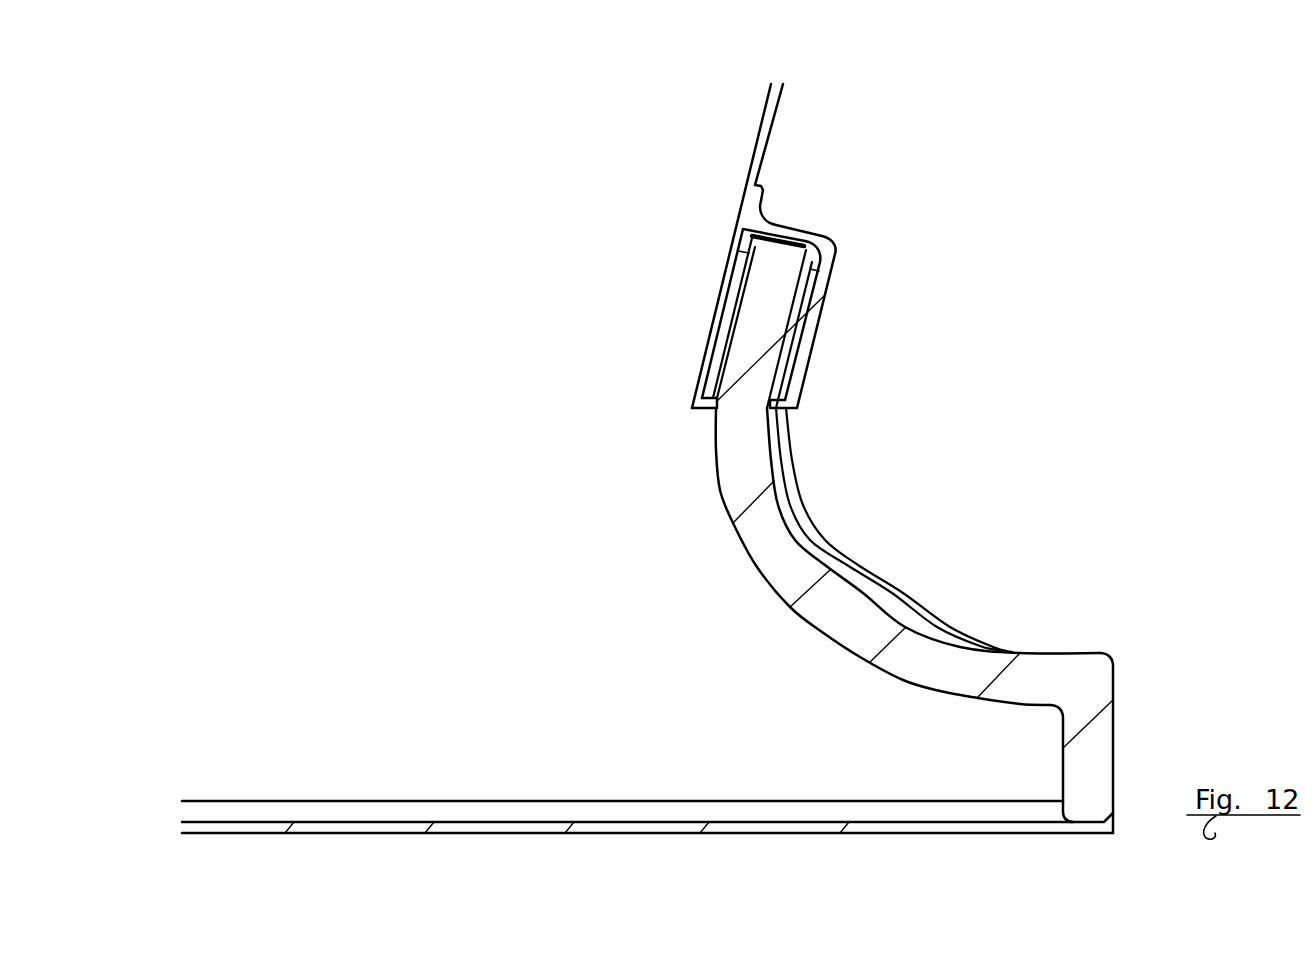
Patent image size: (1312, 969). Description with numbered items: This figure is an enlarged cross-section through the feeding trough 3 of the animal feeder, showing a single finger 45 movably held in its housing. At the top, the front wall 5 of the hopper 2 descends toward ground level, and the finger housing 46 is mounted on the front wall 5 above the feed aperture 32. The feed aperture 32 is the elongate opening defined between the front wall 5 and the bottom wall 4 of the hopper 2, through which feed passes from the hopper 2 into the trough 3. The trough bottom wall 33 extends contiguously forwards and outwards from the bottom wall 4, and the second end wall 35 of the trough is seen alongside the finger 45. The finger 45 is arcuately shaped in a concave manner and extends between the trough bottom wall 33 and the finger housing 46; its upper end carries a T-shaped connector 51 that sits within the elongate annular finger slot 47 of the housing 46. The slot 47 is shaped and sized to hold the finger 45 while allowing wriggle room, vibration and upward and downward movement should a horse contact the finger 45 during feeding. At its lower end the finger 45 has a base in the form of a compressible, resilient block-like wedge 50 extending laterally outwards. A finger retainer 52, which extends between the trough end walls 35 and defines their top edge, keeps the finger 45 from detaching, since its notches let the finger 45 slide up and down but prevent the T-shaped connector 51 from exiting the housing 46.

The hopper 2 is at (764, 245).
The front wall 5 is at (767, 128).
The T-shaped connector 51 is at (795, 258).
The finger housing 46 is at (815, 313).
The feeding trough 3 is at (947, 462).
The finger retainer 52 is at (783, 405).
The annular finger slot 47 is at (717, 405).
The finger 45 is at (793, 560).
The second end wall 35 is at (888, 585).
The block-like wedge 50 is at (1100, 735).
The bottom wall 4 is at (243, 813).
The feed aperture 32 is at (505, 678).
The trough bottom wall 33 is at (983, 825).